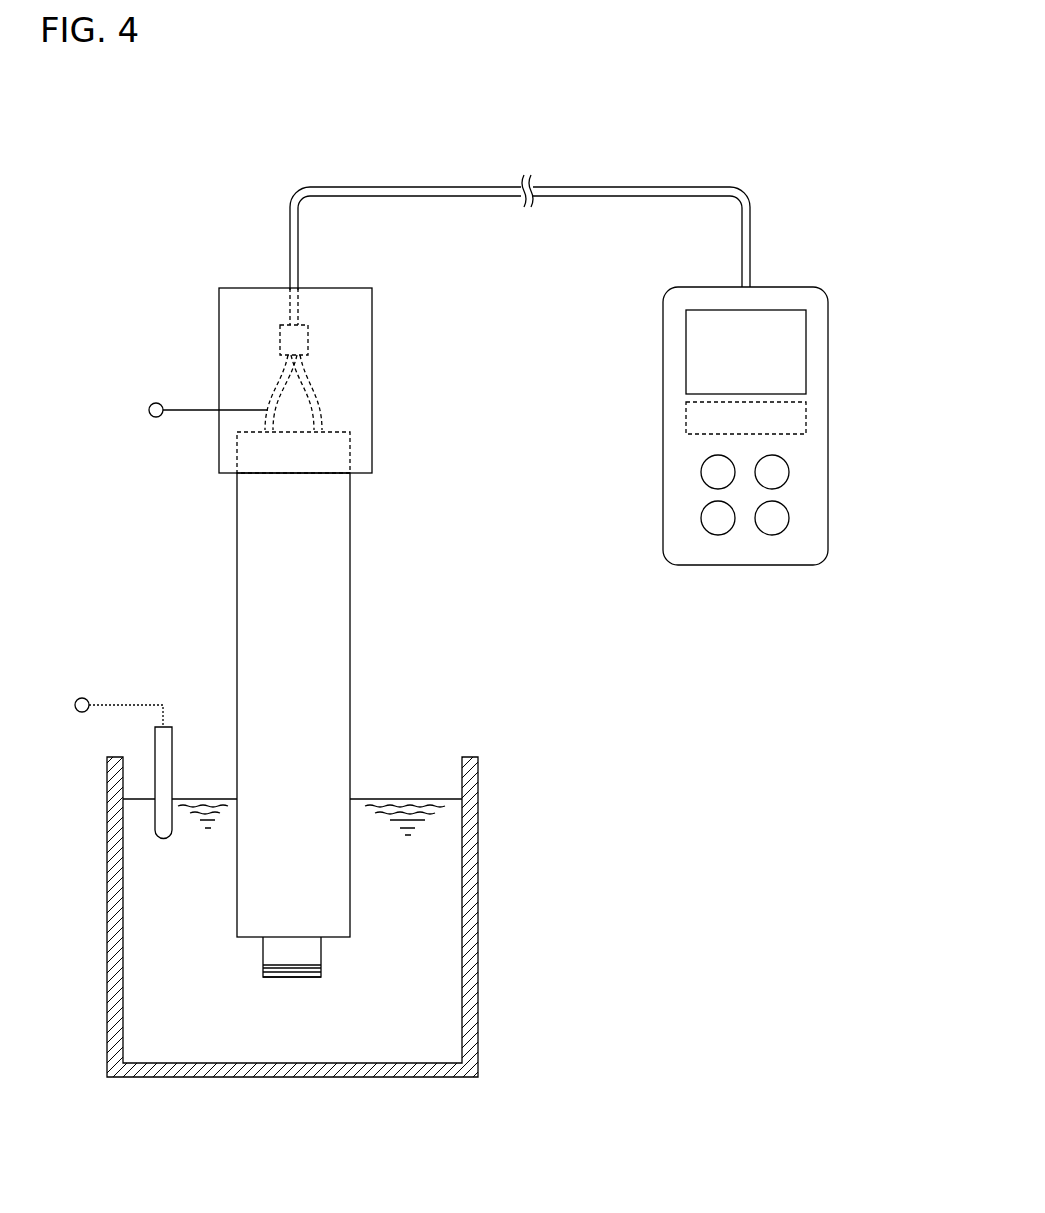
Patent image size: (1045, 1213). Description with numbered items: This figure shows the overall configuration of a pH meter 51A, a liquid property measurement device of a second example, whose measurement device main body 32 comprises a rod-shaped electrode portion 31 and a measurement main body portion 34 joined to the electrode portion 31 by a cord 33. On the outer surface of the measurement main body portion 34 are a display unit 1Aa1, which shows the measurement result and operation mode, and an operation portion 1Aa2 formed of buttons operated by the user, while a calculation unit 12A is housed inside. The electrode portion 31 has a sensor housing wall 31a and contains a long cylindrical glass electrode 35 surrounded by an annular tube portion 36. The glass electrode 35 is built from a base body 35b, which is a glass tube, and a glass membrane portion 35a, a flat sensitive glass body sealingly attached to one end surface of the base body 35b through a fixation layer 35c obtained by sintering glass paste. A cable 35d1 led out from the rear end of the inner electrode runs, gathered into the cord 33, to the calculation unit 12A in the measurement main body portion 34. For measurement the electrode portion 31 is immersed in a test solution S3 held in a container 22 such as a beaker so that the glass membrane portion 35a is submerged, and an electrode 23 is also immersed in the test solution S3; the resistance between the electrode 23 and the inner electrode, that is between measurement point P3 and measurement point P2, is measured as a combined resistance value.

The pH meter 51A is at (716, 84).
The cord 33 is at (612, 186).
The measurement main body portion 34 is at (746, 406).
The measurement device main body 32 is at (657, 459).
The display unit 1Aa1 is at (808, 349).
The calculation unit 12A is at (807, 415).
The operation portion 1Aa2 is at (793, 493).
The cable 35d1 is at (268, 383).
The measurement point P2 is at (188, 412).
The electrode portion 31 is at (281, 667).
The annular tube portion 36 is at (300, 705).
The sensor housing wall 31a is at (341, 617).
The glass electrode 35 is at (283, 991).
The base body 35b is at (261, 946).
The fixation layer 35c is at (322, 962).
The glass membrane portion 35a is at (292, 978).
The container 22 is at (338, 900).
The test solution S3 is at (414, 799).
The electrode 23 is at (153, 748).
The measurement point P3 is at (100, 710).